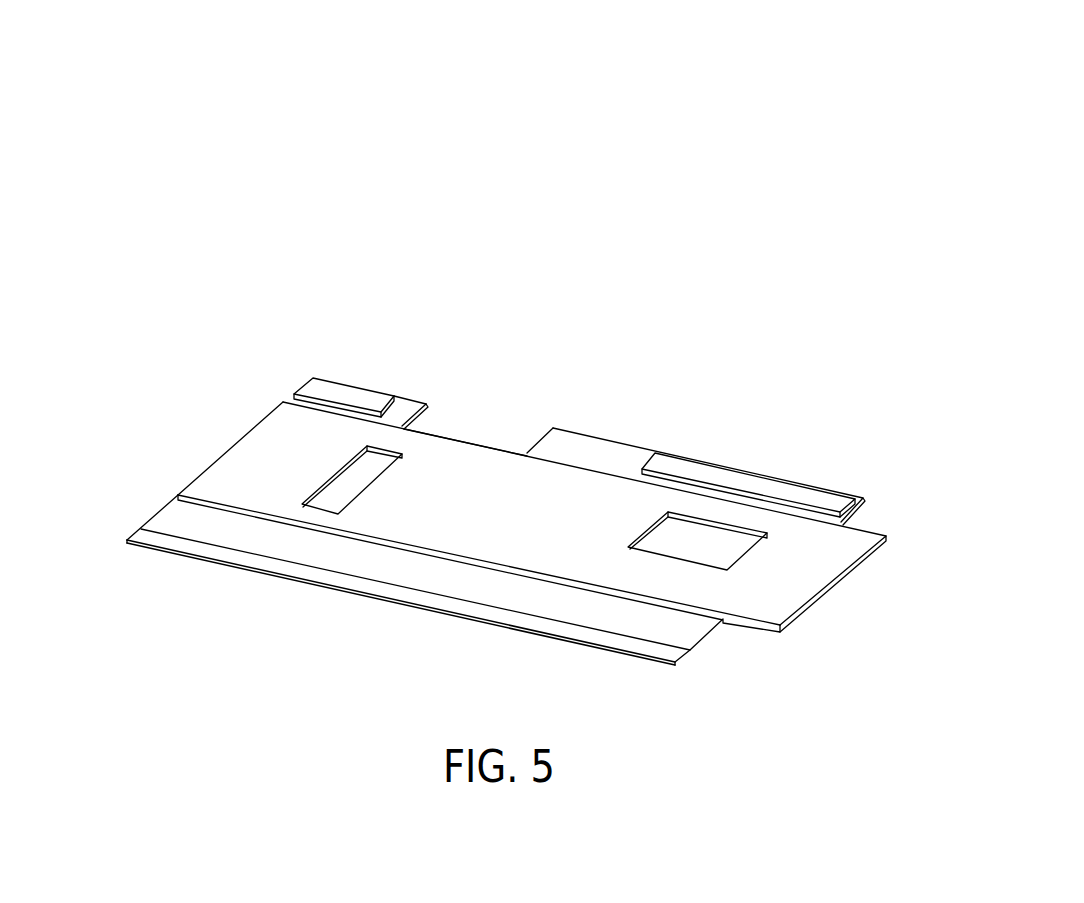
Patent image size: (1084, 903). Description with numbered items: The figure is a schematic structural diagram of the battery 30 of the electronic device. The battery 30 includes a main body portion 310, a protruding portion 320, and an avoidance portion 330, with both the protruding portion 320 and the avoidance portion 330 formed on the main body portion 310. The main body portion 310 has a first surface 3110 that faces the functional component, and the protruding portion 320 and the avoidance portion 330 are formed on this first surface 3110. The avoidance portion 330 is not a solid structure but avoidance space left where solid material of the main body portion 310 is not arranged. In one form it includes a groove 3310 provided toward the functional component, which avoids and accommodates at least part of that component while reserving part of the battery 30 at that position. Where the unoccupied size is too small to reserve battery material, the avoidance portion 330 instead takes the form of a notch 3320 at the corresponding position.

The battery 30 is at (556, 39).
The main body portion 310 is at (163, 515).
The first surface 3110 is at (701, 635).
The protruding portion 320 is at (307, 388).
The avoidance portion 330 is at (519, 242).
The groove 3310 is at (670, 537).
The notch 3320 is at (447, 422).